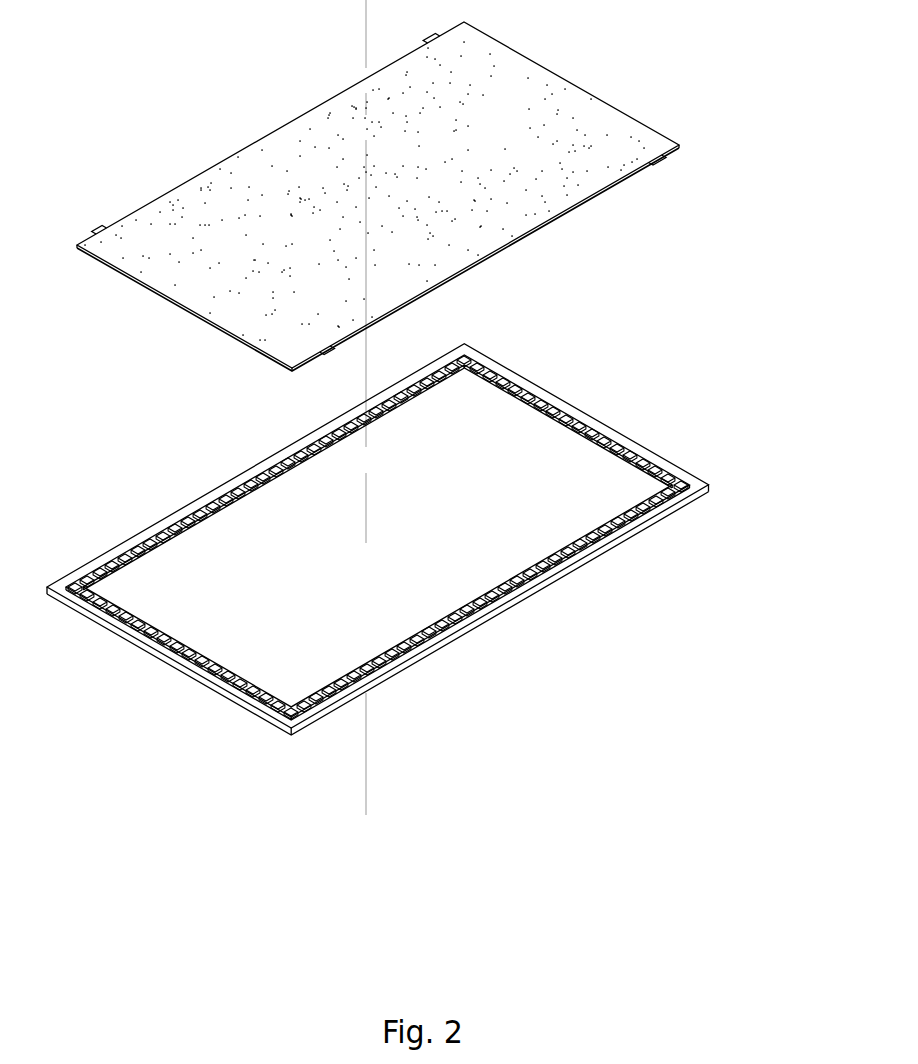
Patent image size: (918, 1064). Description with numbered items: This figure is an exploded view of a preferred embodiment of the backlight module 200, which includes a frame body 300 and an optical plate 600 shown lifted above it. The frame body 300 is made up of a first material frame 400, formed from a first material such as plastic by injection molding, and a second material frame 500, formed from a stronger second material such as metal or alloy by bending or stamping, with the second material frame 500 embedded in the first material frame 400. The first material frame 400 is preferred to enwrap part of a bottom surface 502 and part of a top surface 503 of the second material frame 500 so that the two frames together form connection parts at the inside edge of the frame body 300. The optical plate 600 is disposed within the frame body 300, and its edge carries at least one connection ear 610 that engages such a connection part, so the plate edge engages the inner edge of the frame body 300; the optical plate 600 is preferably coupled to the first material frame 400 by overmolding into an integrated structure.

The backlight module 200 is at (436, 378).
The frame body 300 is at (412, 539).
The first material frame 400 is at (593, 560).
The second material frame 500 is at (391, 537).
The bottom surface 502 is at (217, 503).
The top surface 503 is at (150, 542).
The optical plate 600 is at (413, 196).
The connection ear 610 is at (97, 223).